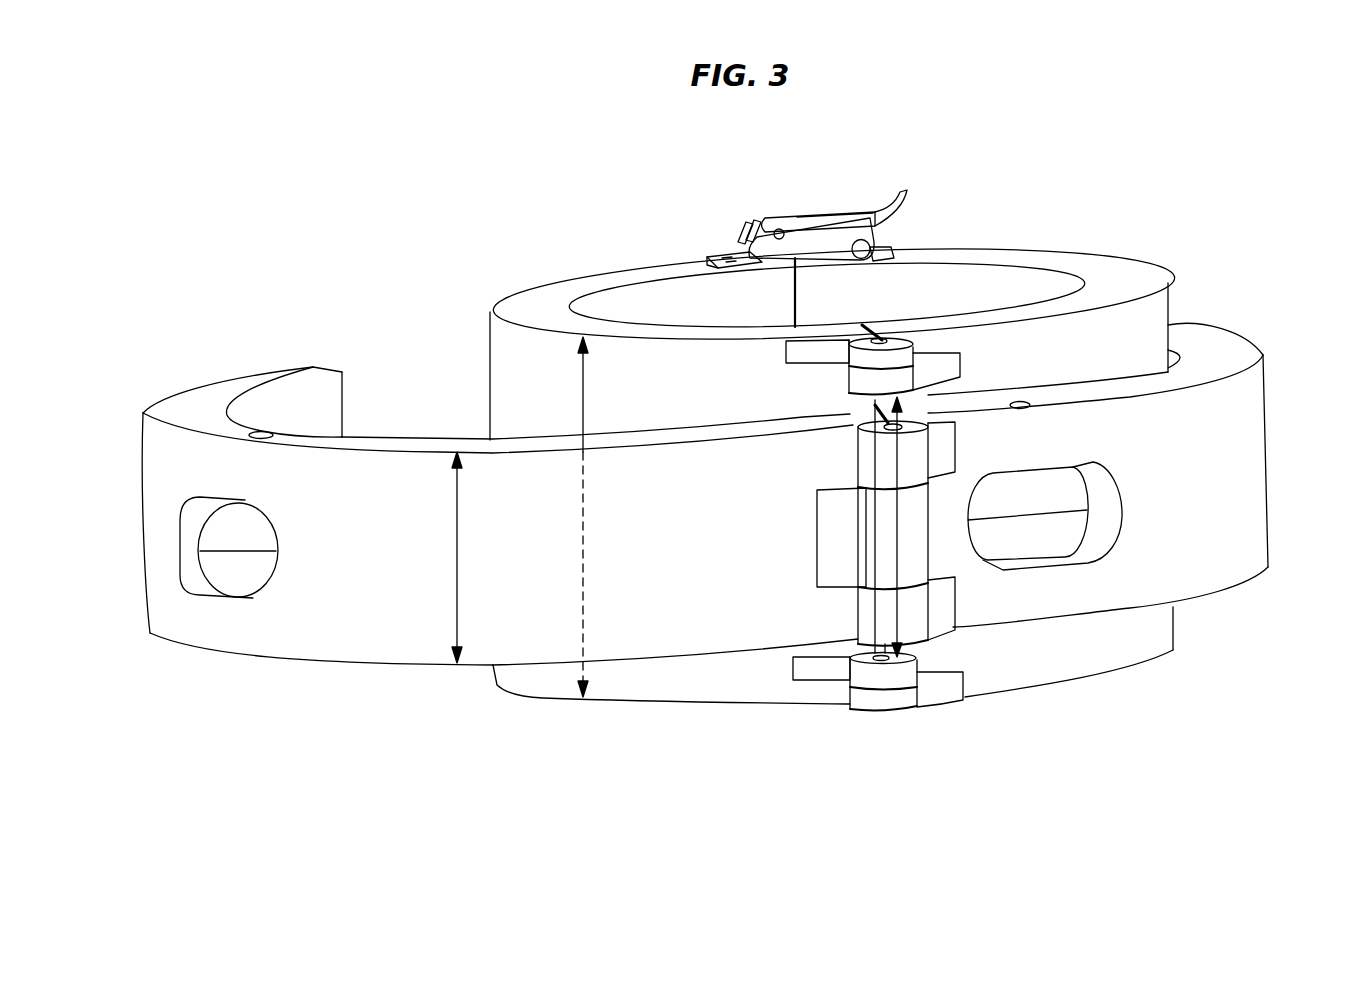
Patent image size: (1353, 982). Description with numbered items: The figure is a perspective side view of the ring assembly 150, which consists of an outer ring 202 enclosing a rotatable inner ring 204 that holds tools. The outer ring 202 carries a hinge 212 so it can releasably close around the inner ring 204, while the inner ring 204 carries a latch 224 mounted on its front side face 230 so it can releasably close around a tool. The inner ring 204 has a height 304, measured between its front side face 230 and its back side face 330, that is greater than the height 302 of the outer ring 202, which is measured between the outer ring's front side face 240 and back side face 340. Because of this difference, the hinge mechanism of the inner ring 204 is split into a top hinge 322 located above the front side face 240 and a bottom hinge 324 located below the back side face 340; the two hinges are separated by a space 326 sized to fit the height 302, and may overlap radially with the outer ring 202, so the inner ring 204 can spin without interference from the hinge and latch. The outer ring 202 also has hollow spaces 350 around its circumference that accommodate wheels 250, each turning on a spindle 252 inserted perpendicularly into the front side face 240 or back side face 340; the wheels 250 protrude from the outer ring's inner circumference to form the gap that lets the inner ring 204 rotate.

The ring assembly 150 is at (1058, 750).
The outer ring 202 is at (1236, 330).
The inner ring 204 is at (780, 299).
The hinge 212 is at (852, 582).
The latch 224 is at (818, 212).
The front side face 230 is at (548, 292).
The front side face 240 is at (246, 386).
The wheels 250 is at (250, 532).
The spindles 252 is at (266, 430).
The height 302 is at (457, 577).
The height 304 is at (583, 395).
The top hinge 322 is at (826, 370).
The bottom hinge 324 is at (845, 704).
The space 326 is at (900, 543).
The back side face 330 is at (541, 702).
The back side face 340 is at (238, 663).
The hollow spaces 350 is at (187, 551).